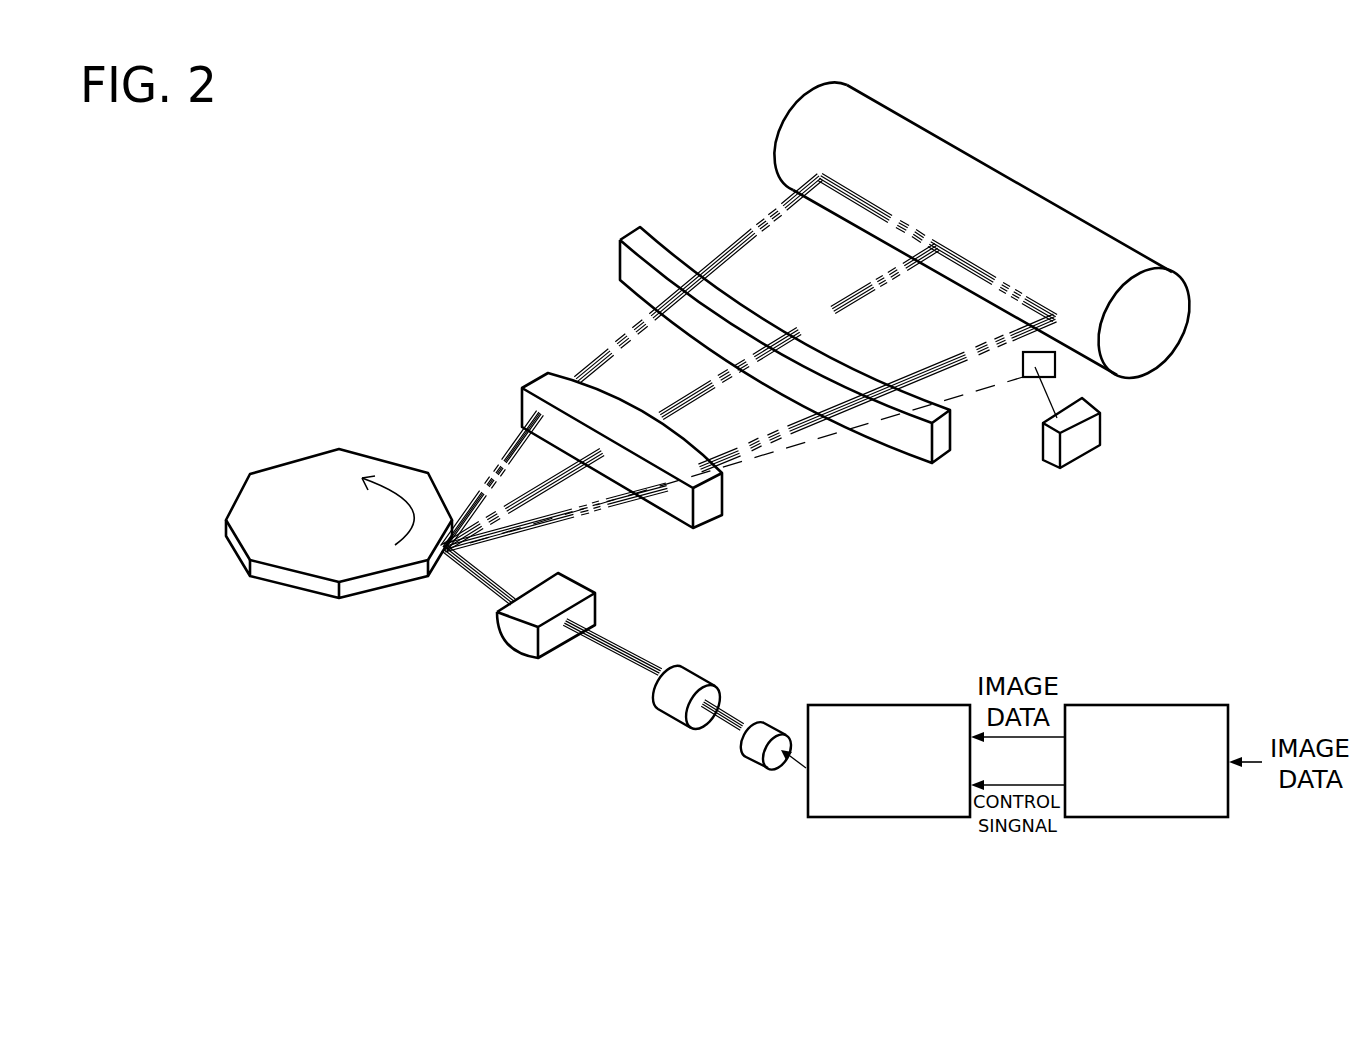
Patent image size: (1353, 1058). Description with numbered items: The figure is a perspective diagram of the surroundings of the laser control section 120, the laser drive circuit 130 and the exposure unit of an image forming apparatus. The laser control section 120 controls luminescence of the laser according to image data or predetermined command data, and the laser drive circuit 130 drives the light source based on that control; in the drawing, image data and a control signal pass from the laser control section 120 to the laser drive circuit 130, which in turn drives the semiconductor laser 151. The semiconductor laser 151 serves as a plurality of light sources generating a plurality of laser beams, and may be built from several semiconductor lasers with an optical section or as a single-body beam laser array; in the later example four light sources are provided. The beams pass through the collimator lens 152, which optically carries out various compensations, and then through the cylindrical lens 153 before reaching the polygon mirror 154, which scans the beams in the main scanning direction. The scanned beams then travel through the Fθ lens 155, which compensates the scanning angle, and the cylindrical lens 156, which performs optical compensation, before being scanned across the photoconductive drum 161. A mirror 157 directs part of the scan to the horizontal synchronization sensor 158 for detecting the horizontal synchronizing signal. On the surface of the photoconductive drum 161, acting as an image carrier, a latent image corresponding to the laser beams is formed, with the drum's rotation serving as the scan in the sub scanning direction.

The laser control section 120 is at (1145, 818).
The laser drive circuit 130 is at (887, 818).
The semiconductor laser 151 is at (764, 731).
The collimator lens 152 is at (672, 672).
The cylindrical lens 153 is at (577, 580).
The polygon mirror 154 is at (306, 467).
The Fθ lens 155 is at (536, 386).
The cylindrical lens 156 is at (656, 243).
The mirror 157 is at (1055, 377).
The horizontal synchronization sensor 158 is at (1046, 463).
The photoconductive drum 161 is at (847, 86).